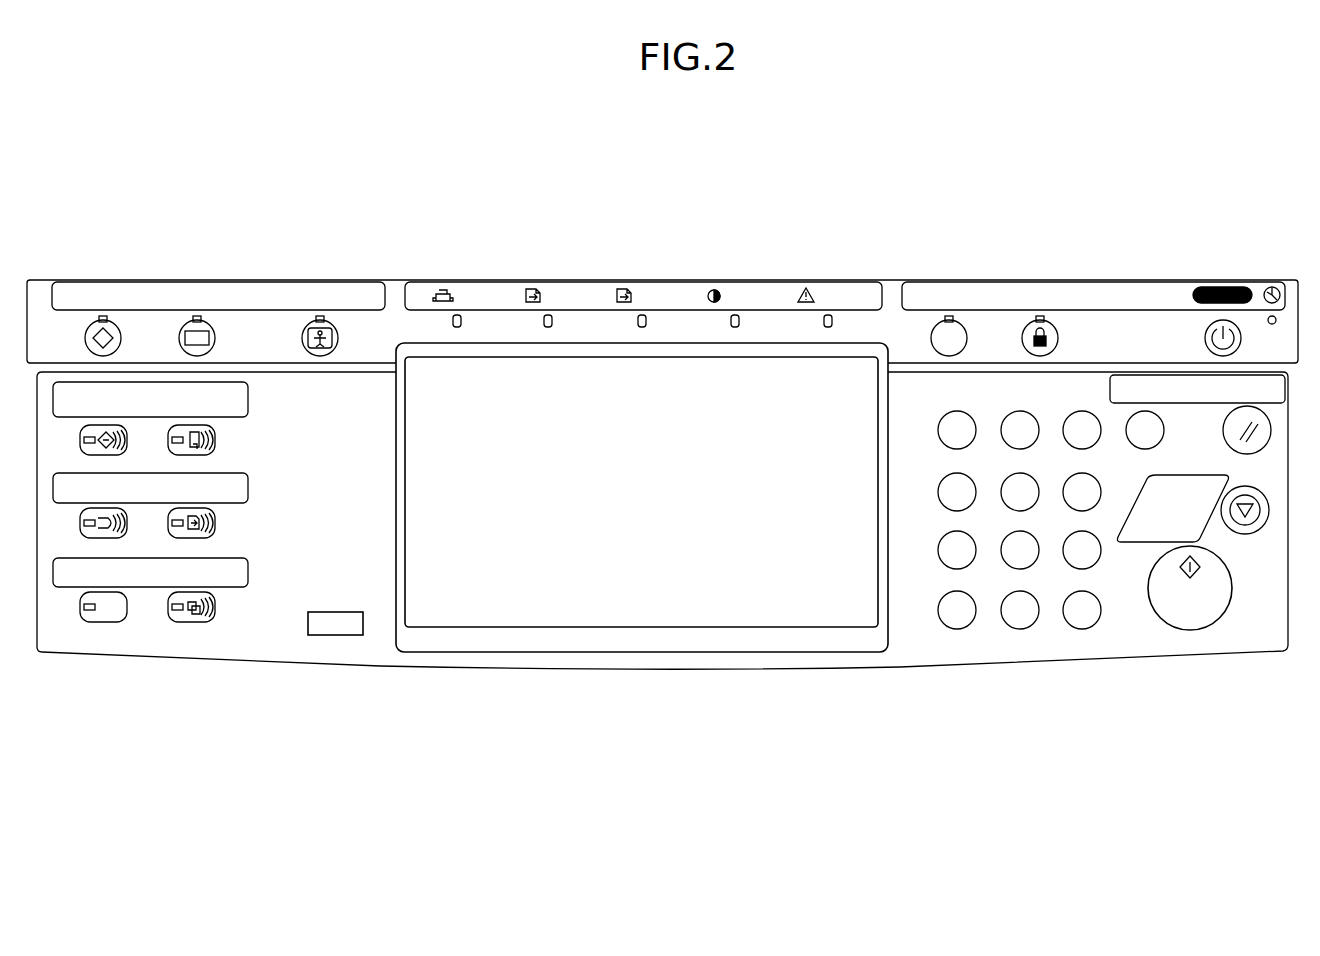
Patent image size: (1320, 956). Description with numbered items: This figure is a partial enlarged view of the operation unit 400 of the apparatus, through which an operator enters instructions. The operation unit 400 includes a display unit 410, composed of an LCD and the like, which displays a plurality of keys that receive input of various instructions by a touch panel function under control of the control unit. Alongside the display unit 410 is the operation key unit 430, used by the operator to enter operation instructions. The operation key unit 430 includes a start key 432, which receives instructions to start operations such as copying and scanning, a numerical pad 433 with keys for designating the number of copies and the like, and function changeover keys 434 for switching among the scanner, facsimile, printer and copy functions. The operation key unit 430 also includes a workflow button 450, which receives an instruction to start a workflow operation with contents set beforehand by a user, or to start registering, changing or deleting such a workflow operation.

The operation unit 400 is at (912, 200).
The display unit 410 is at (542, 592).
The operation key unit 430 is at (1260, 622).
The start key 432 is at (1182, 613).
The numerical pad 433 is at (930, 632).
The function changeover keys 434 is at (258, 614).
The workflow button 450 is at (330, 627).